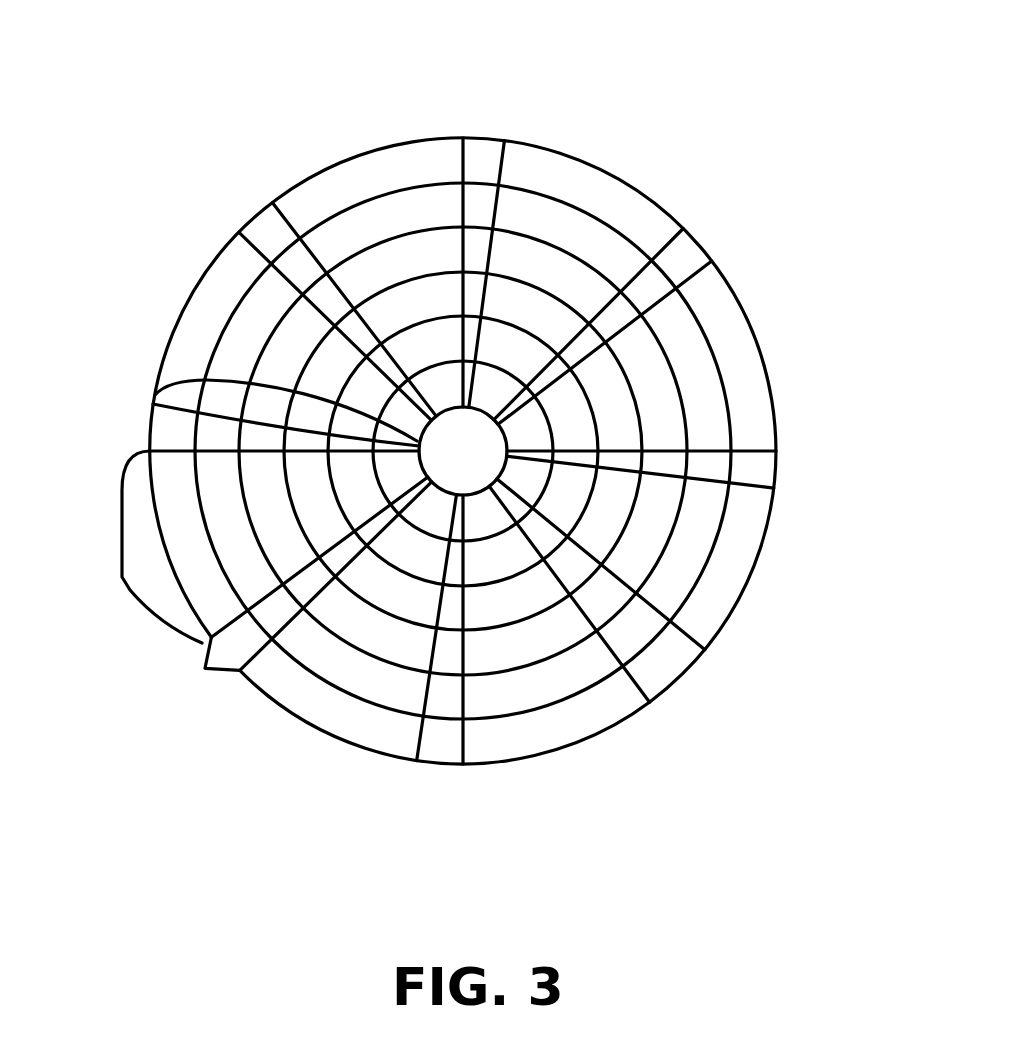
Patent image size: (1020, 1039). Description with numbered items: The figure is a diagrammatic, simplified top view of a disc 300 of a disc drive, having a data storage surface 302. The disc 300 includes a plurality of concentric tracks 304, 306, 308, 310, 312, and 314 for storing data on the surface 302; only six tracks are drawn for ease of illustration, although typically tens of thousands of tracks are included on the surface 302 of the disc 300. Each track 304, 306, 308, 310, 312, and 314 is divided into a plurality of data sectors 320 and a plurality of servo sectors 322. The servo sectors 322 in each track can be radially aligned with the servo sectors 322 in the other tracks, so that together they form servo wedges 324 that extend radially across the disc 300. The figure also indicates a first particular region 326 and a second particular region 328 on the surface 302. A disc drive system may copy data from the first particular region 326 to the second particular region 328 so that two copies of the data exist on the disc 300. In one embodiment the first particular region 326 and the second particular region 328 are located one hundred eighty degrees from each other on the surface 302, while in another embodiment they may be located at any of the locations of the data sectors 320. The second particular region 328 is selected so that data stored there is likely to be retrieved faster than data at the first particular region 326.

The disc 300 is at (307, 722).
The surface 302 is at (422, 277).
The track 304 is at (595, 374).
The track 306 is at (562, 410).
The track 308 is at (527, 441).
The track 310 is at (617, 570).
The track 312 is at (685, 565).
The track 314 is at (740, 548).
The data sectors 320 is at (121, 578).
The servo sectors 322 is at (205, 668).
The servo wedges 324 is at (272, 380).
The first particular region 326 is at (538, 723).
The second particular region 328 is at (385, 170).